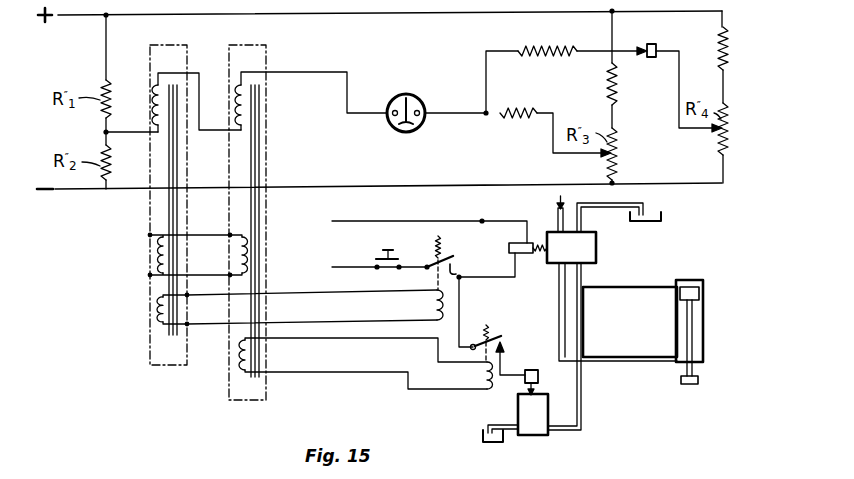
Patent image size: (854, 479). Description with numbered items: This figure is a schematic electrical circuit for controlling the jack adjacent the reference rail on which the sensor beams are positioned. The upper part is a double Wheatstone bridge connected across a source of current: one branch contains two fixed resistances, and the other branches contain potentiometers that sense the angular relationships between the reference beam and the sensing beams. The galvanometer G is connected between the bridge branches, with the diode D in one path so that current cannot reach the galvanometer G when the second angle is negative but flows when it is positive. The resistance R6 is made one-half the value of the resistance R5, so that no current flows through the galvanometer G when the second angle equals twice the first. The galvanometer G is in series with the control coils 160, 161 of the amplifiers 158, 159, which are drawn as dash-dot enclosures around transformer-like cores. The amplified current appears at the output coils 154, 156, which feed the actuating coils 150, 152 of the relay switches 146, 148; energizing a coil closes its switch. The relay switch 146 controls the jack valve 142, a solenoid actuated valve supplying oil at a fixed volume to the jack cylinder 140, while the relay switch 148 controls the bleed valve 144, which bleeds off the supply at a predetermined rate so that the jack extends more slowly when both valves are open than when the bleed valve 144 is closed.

The jack cylinder 140 is at (704, 343).
The jack valve 142 is at (557, 229).
The bleed valve 144 is at (521, 440).
The relay switch 146 is at (468, 256).
The relay switch 148 is at (513, 378).
The actuating coil 150 is at (432, 306).
The actuating coil 152 is at (483, 378).
The output coil 154 is at (160, 317).
The output coil 156 is at (240, 362).
The amplifier 158 is at (149, 368).
The amplifier 159 is at (237, 401).
The control coil 160 is at (157, 113).
The control coil 161 is at (248, 101).
The galvanometer G is at (413, 97).
The diode D is at (653, 43).
The resistance R5 is at (548, 45).
The resistance R6 is at (555, 132).